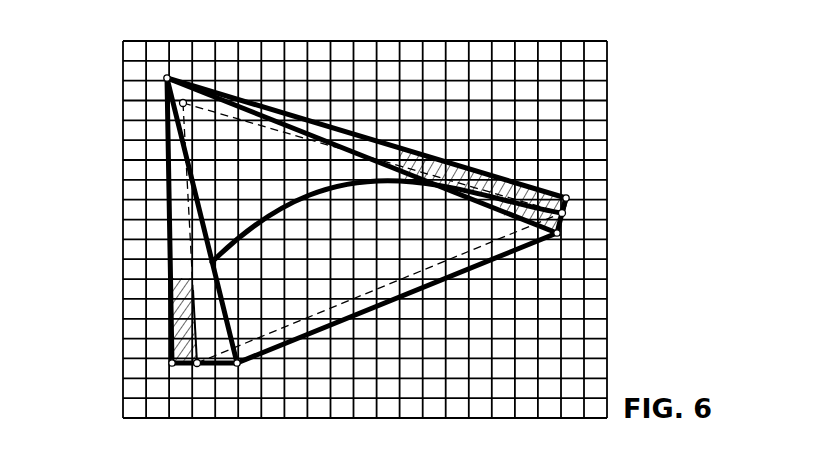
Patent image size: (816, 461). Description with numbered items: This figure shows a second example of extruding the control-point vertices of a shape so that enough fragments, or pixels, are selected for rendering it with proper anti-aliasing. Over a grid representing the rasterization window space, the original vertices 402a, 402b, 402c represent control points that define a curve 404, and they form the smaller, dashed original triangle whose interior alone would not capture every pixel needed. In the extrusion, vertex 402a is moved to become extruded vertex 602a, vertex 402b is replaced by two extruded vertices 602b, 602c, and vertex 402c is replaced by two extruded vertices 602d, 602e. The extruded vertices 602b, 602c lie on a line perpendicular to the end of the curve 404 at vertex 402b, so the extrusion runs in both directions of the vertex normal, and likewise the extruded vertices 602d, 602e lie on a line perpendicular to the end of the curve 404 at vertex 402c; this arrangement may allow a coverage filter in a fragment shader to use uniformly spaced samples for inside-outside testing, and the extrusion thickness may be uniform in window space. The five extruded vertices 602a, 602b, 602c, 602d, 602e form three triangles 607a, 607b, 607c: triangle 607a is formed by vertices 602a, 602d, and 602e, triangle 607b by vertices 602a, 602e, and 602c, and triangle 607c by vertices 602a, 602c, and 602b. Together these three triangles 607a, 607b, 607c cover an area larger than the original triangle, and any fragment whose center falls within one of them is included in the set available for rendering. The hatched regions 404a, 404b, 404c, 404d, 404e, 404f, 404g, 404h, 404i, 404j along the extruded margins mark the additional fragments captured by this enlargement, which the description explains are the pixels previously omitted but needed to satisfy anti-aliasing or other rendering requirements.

The vertex 402a is at (179, 104).
The vertex 402b is at (566, 214).
The vertex 402c is at (196, 367).
The curve 404 is at (190, 238).
The first hatched sub-region 404a is at (170, 287).
The second hatched sub-region 404b is at (170, 308).
The third hatched sub-region 404c is at (170, 330).
The fourth hatched sub-region 404d is at (170, 350).
The fifth hatched sub-region 404e is at (412, 162).
The sixth hatched sub-region 404f is at (438, 168).
The seventh hatched sub-region 404g is at (462, 172).
The eighth hatched sub-region 404h is at (503, 183).
The ninth hatched sub-region 404i is at (520, 182).
The tenth sub-region segment 404j is at (565, 206).
The extruded vertex 602a is at (163, 80).
The extruded vertex 602b is at (569, 197).
The extruded vertex 602c is at (560, 235).
The extruded vertex 602d is at (170, 363).
The extruded vertex 602e is at (238, 367).
The triangle 607a is at (168, 183).
The triangle 607b is at (185, 203).
The triangle 607c is at (298, 116).